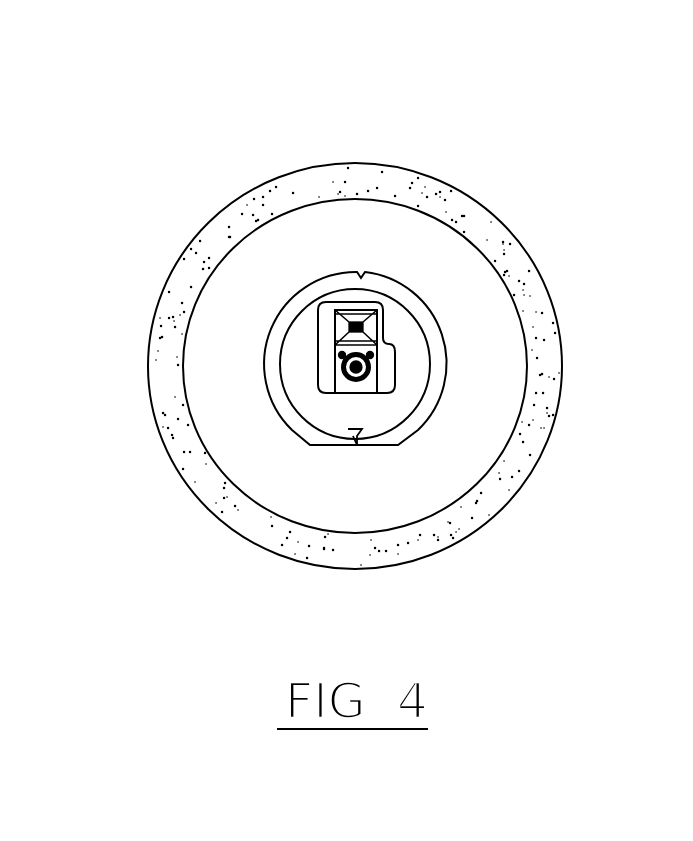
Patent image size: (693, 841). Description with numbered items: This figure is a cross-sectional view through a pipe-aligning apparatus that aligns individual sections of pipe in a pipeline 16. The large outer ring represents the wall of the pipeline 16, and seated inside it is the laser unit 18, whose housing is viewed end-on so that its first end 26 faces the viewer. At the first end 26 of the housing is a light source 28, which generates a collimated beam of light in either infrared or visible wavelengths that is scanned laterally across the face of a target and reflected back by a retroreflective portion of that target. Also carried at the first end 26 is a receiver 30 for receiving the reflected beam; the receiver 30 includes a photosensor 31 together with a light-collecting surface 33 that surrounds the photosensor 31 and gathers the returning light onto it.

The pipeline 16 is at (428, 175).
The laser unit 18 is at (282, 318).
The first end 26 is at (428, 322).
The light source 28 is at (360, 371).
The receiver 30 is at (380, 322).
The photosensor 31 is at (372, 331).
The light-collecting surface 33 is at (356, 312).